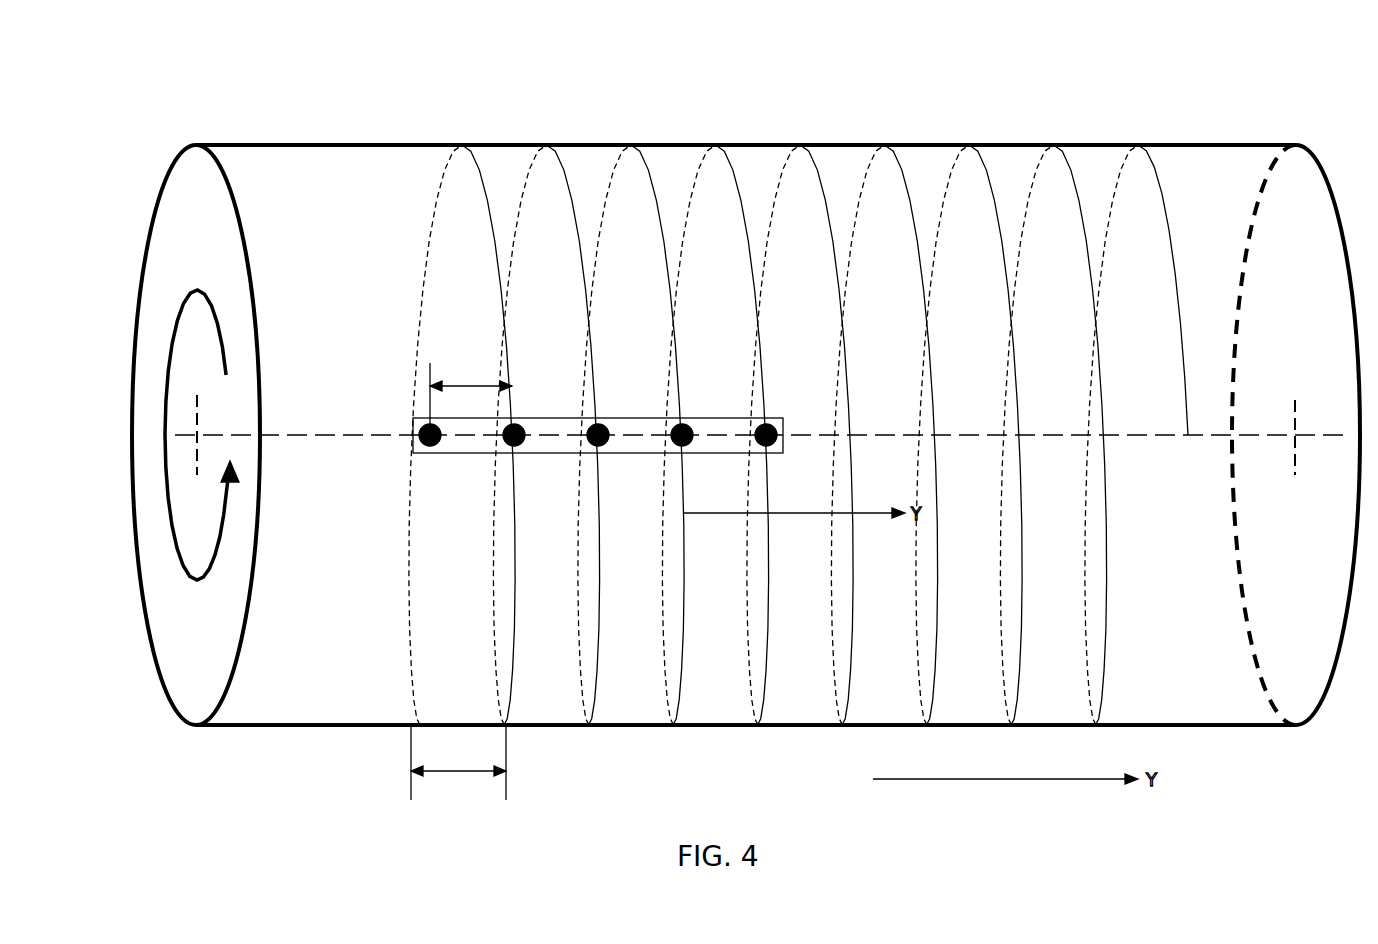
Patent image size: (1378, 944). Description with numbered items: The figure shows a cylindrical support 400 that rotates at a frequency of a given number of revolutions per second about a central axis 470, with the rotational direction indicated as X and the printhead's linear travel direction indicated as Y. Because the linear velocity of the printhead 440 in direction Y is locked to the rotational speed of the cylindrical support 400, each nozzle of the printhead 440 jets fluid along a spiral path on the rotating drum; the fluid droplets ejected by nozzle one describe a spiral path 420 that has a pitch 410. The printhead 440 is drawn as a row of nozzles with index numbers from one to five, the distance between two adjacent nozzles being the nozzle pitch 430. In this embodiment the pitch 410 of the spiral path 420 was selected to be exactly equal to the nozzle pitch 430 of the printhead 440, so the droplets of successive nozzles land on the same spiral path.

The cylindrical support 400 is at (320, 242).
The pitch 410 is at (467, 773).
The spiral path 420 is at (435, 547).
The nozzle pitch 430 is at (460, 384).
The printhead 440 is at (773, 418).
The central axis 470 is at (1247, 437).